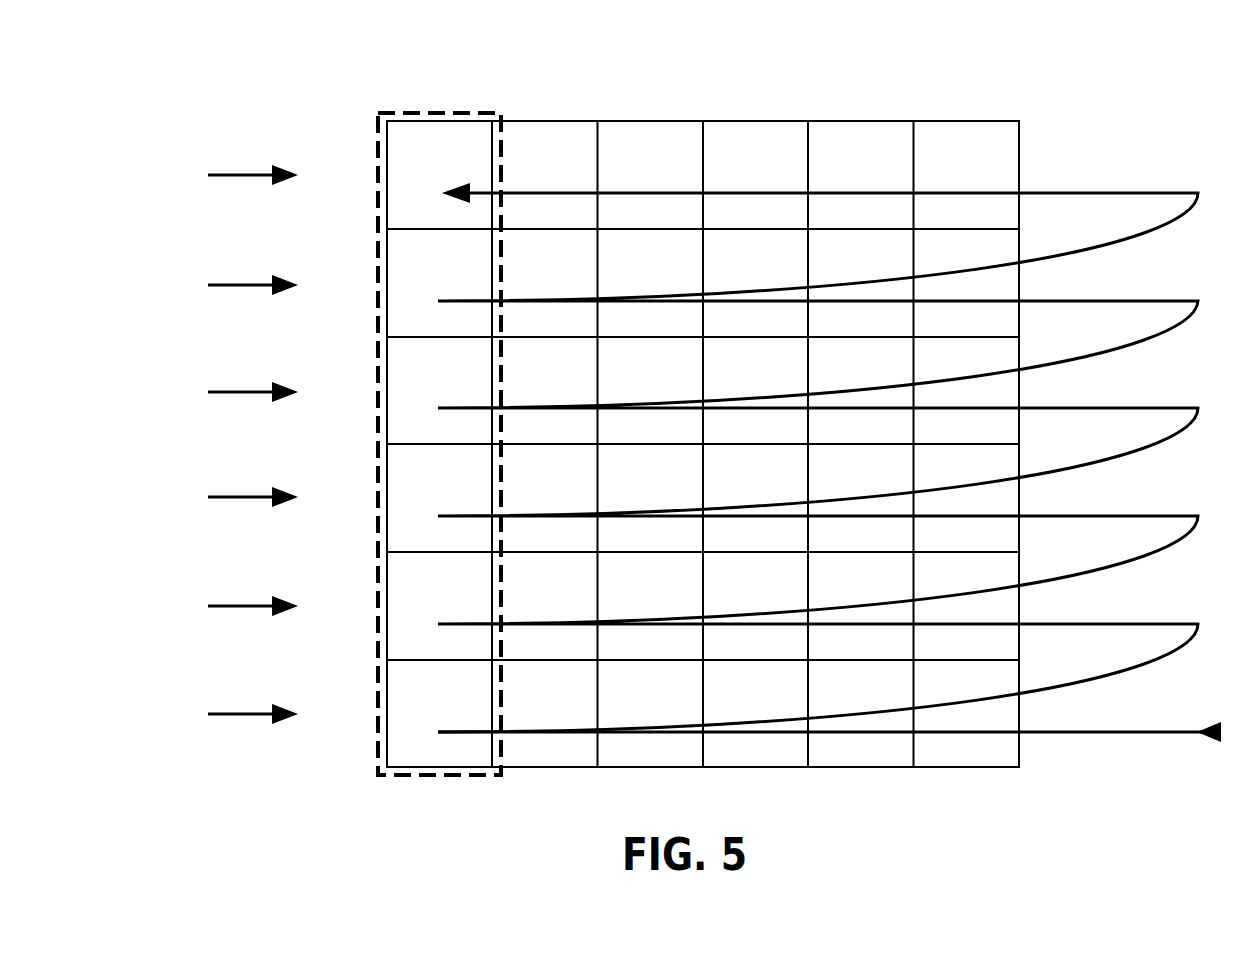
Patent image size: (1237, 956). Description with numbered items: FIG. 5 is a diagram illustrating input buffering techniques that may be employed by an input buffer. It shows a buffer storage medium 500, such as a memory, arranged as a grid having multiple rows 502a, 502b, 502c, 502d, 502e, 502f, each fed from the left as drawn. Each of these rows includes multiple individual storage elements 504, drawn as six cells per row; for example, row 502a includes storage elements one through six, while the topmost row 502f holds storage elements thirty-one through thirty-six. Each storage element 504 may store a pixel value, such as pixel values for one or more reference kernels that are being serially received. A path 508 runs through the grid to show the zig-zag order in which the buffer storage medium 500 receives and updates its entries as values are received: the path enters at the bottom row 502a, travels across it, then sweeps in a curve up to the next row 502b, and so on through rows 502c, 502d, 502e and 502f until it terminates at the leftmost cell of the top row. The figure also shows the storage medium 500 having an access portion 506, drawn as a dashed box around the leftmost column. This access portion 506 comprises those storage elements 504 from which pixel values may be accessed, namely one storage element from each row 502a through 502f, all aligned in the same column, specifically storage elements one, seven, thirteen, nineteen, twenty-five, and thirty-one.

The buffer storage medium 500 is at (1072, 90).
The row 502a is at (230, 714).
The row 502b is at (230, 606).
The row 502c is at (230, 497).
The row 502d is at (230, 392).
The row 502e is at (230, 285).
The row 502f is at (231, 175).
The storage element 504 is at (703, 444).
The access portion 506 is at (398, 111).
The path 508 is at (1112, 733).